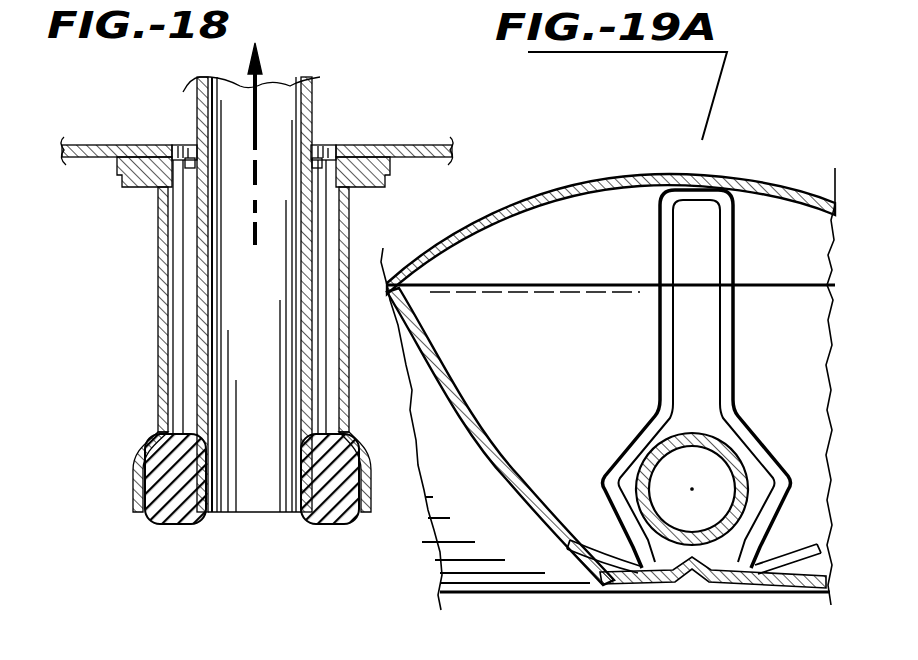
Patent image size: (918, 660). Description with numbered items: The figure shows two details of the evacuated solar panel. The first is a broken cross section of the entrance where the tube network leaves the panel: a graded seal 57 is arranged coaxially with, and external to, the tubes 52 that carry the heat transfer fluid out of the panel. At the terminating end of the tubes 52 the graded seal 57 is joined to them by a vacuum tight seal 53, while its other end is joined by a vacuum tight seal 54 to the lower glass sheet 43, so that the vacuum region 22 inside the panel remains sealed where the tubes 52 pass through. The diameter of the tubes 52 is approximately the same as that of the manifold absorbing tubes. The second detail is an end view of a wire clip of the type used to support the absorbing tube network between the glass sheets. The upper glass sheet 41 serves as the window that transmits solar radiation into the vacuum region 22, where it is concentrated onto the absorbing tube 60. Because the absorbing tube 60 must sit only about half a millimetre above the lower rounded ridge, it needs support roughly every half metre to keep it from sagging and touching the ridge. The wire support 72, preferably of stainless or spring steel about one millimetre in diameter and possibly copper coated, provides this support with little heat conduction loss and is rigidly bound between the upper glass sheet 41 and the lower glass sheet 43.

In FIG. 18, the vacuum region 22 is at (187, 186).
In FIG. 19A, the vacuum region 22 is at (580, 250).
In FIG. 19A, the upper glass sheet 41 is at (792, 180).
In FIG. 18, the lower glass sheet 43 is at (357, 143).
In FIG. 19A, the lower glass sheet 43 is at (504, 472).
In FIG. 18, the tubes 52 is at (313, 125).
In FIG. 18, the vacuum tight seal 53 is at (170, 524).
In FIG. 18, the vacuum tight seal 54 is at (118, 172).
In FIG. 18, the graded seal 57 is at (158, 312).
In FIG. 19A, the absorbing tube 60 is at (700, 432).
In FIG. 19A, the wire supports 72 is at (660, 363).